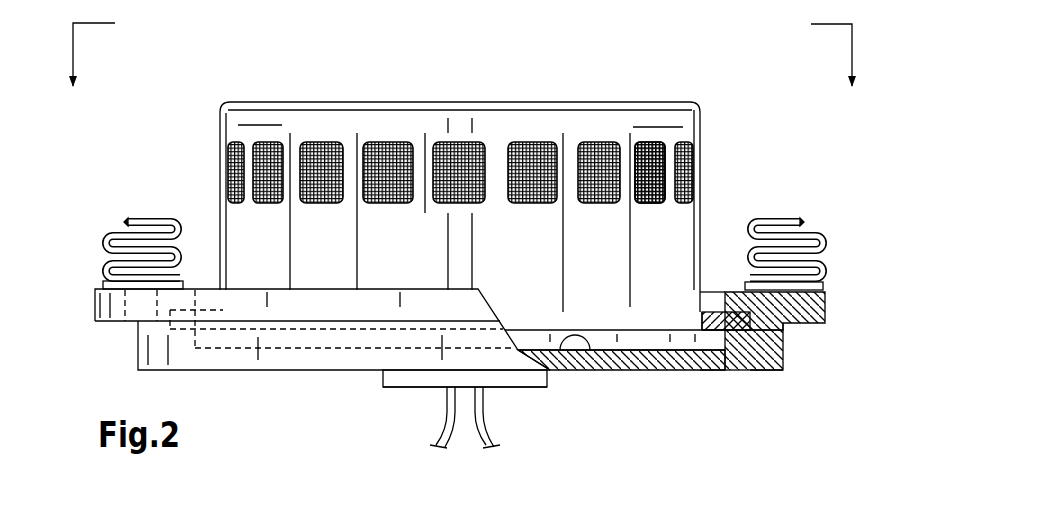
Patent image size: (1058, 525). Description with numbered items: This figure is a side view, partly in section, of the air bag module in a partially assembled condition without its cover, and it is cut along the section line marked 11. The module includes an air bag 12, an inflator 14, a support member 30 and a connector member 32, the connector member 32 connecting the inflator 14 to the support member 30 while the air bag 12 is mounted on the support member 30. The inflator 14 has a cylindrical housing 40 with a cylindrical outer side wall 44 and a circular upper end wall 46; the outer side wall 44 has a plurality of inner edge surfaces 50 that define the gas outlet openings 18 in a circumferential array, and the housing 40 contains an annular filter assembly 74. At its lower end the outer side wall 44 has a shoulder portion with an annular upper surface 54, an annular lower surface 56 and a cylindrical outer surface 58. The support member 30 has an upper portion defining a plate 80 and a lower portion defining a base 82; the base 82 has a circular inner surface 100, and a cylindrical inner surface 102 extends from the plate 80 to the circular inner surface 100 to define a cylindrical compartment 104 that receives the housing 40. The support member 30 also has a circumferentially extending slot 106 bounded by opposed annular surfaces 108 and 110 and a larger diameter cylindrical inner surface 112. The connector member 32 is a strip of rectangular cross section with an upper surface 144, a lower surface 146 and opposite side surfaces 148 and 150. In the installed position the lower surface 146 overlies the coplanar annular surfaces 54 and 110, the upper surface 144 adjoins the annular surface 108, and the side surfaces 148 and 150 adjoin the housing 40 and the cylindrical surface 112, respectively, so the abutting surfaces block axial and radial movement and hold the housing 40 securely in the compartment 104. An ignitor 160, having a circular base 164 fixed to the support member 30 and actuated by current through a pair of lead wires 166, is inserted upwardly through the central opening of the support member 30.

The section line 11- 11 is at (467, 70).
The air bag 12 is at (122, 242).
The inflator 14 is at (375, 80).
The gas outlet openings 18 is at (603, 140).
The support member 30 is at (92, 298).
The connector member 32 is at (715, 292).
The housing 40 is at (218, 125).
The outer side wall 44 is at (245, 268).
The upper end wall 46 is at (337, 102).
The inner edge surfaces 50 is at (257, 204).
The annular upper surface 54 is at (563, 330).
The annular lower surface 56 is at (675, 370).
The cylindrical outer surface 58 is at (760, 372).
The filter assembly 74 is at (650, 173).
The plate 80 is at (110, 310).
The base 82 is at (157, 353).
The circular inner surface 100 is at (567, 350).
The cylindrical inner surface 102 is at (707, 292).
The cylindrical compartment 104 is at (655, 292).
The slot 106 is at (683, 320).
The annular surface 108 is at (805, 297).
The annular surface 110 is at (785, 368).
The cylindrical inner surface 112 is at (783, 330).
The upper surface 144 is at (700, 305).
The lower surface 146 is at (710, 373).
The side surface 148 is at (695, 313).
The side surface 150 is at (752, 315).
The ignitor 160 is at (380, 389).
The circular base 164 is at (417, 380).
The lead wires 166 is at (483, 402).